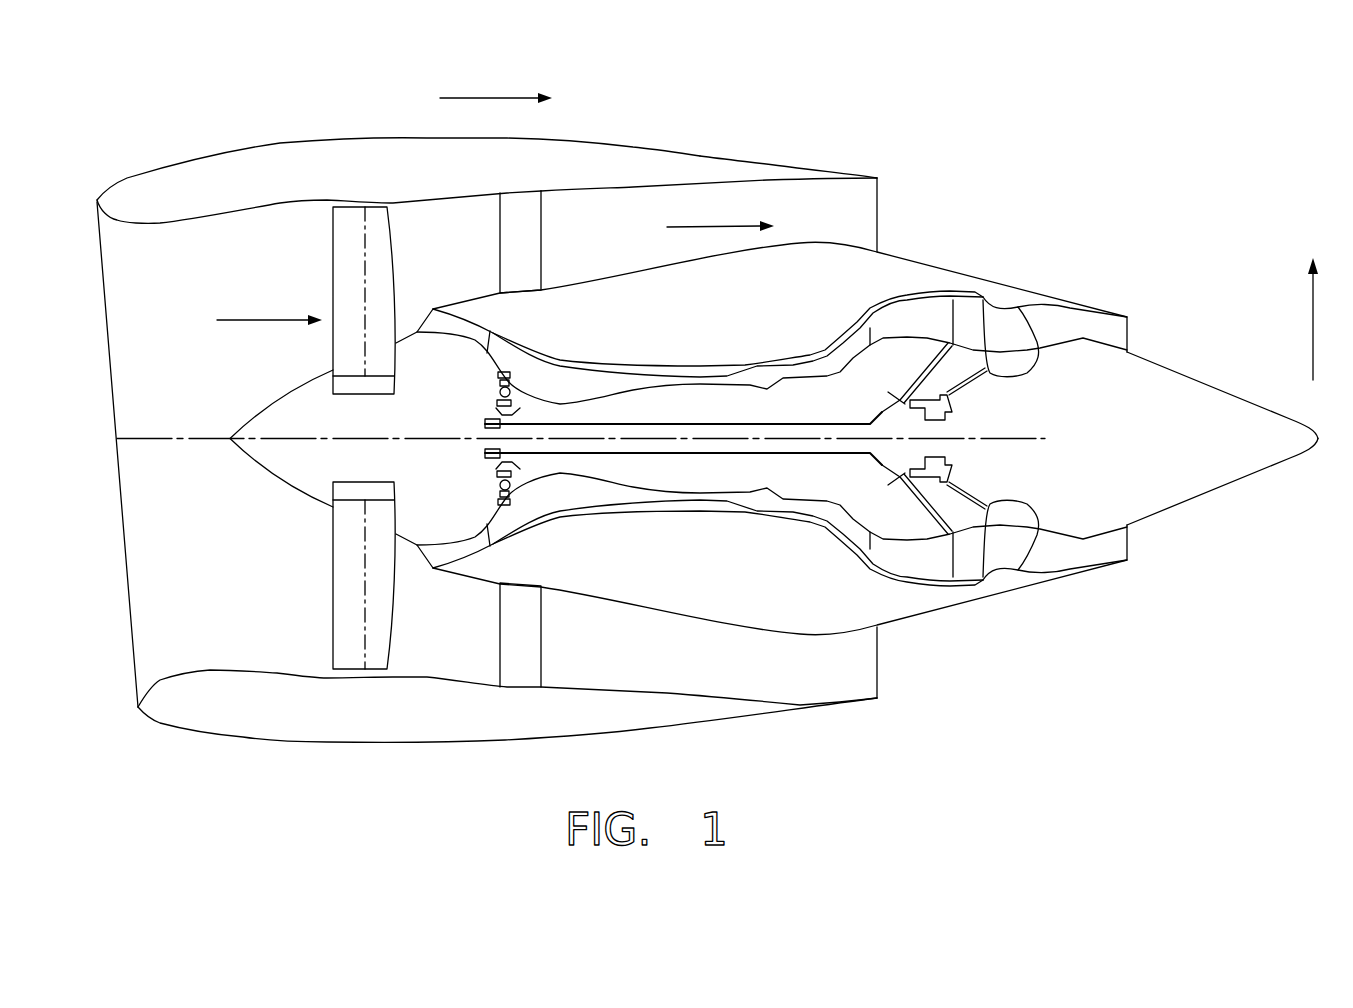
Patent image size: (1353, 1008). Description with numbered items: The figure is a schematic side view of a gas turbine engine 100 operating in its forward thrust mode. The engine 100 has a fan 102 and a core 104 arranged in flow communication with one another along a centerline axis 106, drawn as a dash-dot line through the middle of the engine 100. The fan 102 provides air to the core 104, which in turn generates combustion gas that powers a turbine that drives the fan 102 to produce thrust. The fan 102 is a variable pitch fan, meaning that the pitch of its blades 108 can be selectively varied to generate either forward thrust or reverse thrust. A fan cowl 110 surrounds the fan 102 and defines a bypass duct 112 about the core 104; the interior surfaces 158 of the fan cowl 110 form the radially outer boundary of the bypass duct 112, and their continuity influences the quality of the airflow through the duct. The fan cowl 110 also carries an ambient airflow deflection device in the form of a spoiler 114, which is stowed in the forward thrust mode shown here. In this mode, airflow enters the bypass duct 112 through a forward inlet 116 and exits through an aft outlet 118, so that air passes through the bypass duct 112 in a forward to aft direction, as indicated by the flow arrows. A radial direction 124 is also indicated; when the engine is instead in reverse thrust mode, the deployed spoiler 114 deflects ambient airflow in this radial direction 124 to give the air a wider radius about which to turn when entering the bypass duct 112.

The gas turbine engine 100 is at (732, 113).
The fan 102 is at (240, 292).
The core 104 is at (577, 266).
The centerline axis 106 is at (185, 439).
The blades 108 is at (345, 277).
The fan cowl 110 is at (320, 130).
The bypass duct 112 is at (840, 212).
The spoiler 114 is at (783, 160).
The forward inlet 116 is at (97, 202).
The aft outlet 118 is at (883, 177).
The radial direction 124 is at (1313, 314).
The interior surfaces 158 is at (680, 185).